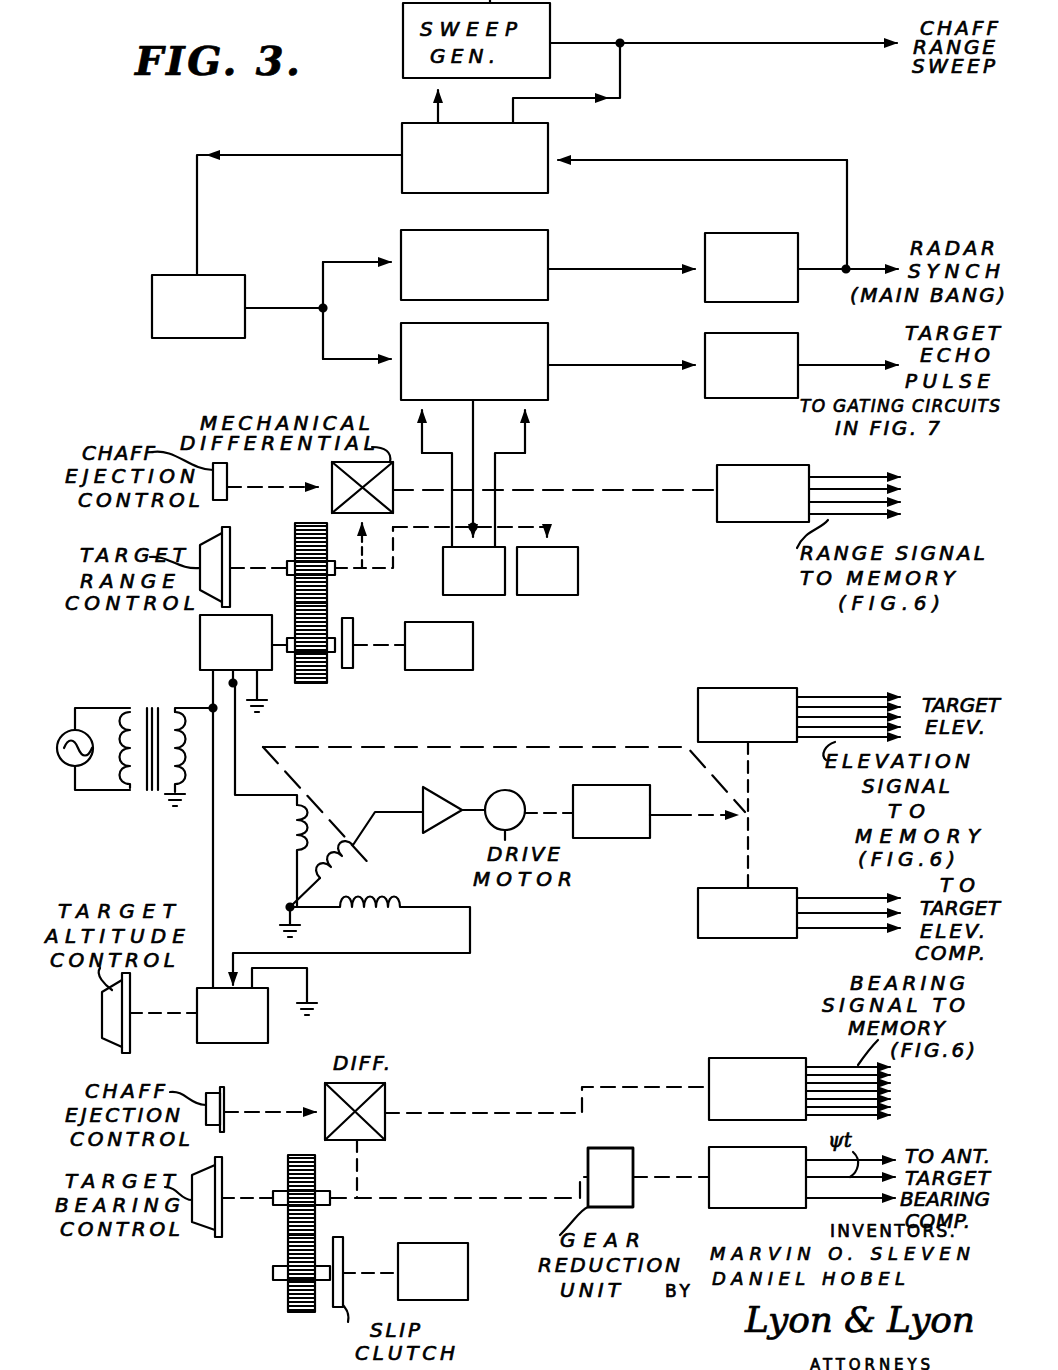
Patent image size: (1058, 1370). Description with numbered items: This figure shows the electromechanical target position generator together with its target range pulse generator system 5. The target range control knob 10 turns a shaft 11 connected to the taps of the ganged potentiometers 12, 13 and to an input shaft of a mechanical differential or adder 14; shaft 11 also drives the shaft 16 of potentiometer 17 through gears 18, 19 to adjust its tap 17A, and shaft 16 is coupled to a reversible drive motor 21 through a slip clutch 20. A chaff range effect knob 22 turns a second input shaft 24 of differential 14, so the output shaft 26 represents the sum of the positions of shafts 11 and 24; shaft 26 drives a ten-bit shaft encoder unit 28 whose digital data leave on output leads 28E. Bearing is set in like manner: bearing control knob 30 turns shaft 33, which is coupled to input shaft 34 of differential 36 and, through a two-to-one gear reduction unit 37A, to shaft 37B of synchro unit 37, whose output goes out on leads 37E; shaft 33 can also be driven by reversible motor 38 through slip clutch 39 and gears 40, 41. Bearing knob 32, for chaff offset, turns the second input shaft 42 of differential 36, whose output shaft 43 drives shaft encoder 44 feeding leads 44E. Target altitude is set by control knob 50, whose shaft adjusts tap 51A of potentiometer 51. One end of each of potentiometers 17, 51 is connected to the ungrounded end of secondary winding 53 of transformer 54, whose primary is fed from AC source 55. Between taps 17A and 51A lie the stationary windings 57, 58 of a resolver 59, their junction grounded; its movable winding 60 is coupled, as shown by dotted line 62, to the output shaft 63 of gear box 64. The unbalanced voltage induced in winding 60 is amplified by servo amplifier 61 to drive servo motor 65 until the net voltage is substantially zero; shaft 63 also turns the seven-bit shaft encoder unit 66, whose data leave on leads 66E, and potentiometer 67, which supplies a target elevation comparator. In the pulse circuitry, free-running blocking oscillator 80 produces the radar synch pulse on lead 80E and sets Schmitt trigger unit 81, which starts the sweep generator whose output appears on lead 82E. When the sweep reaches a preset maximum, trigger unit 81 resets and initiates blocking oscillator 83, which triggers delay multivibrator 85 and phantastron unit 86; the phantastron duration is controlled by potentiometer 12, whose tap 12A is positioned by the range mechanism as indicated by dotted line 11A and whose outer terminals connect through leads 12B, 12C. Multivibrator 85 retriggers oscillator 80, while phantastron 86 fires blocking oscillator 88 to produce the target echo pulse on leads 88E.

The timing circuit 5 is at (604, 136).
The target range control knob 10 is at (230, 580).
The shaft 11 is at (278, 540).
The dotted line 11A is at (395, 555).
The potentiometer 12 is at (445, 585).
The tap 12A is at (473, 522).
The lead 12B is at (418, 428).
The lead 12C is at (527, 432).
The potentiometer 13 is at (568, 590).
The mechanical differential 14 is at (393, 478).
The shaft 16 is at (271, 691).
The potentiometer 17 is at (230, 615).
The tap 17A is at (233, 688).
The gear 18 is at (327, 555).
The gear 19 is at (318, 642).
The slip clutch 20 is at (353, 660).
The reversible drive motor 21 is at (462, 660).
The chaff range effect control knob 22 is at (227, 493).
The input shaft 24 is at (247, 487).
The output shaft 26 is at (532, 490).
The shaft encoder unit 28 is at (775, 468).
The output leads 28E is at (850, 465).
The bearing control knob 30 is at (222, 1225).
The bearing knob 32 is at (224, 1118).
The shaft 33 is at (238, 1196).
The input shaft 34 is at (358, 1152).
The differential 36 is at (385, 1097).
The synchro unit 37 is at (709, 1153).
The gear reduction unit 37A is at (588, 1152).
The shaft 37B is at (672, 1180).
The leads 37E is at (840, 1208).
The reversible drive motor 38 is at (458, 1245).
The slip clutch 39 is at (345, 1247).
The gear 40 is at (275, 1270).
The gear 41 is at (314, 1194).
The second input shaft 42 is at (285, 1110).
The output shaft 43 is at (492, 1115).
The shaft encoder 44 is at (770, 1060).
The leads 44E is at (814, 1062).
The control knob 50 is at (130, 1045).
The potentiometer 51 is at (258, 1030).
The tap 51A is at (232, 955).
The secondary winding 53 is at (186, 758).
The transformer 54 is at (153, 699).
The AC source 55 is at (72, 767).
The winding 57 is at (292, 830).
The winding 58 is at (395, 900).
The resolver 59 is at (358, 820).
The movable winding 60 is at (370, 855).
The servo amplifier 61 is at (445, 828).
The dotted line 62 is at (432, 748).
The output shaft 63 is at (700, 818).
The gear box 64 is at (632, 838).
The servo motor 65 is at (520, 796).
The shaft encoder unit 66 is at (768, 690).
The leads 66E is at (846, 688).
The potentiometer 67 is at (777, 938).
The blocking oscillator 80 is at (745, 240).
The lead 80E is at (858, 269).
The Schmitt trigger unit 81 is at (402, 135).
The lead 82E is at (778, 44).
The blocking oscillator 83 is at (212, 275).
The delay multivibrator 85 is at (540, 265).
The phantastron unit 86 is at (535, 345).
The blocking oscillator 88 is at (775, 350).
The leads 88E is at (828, 365).